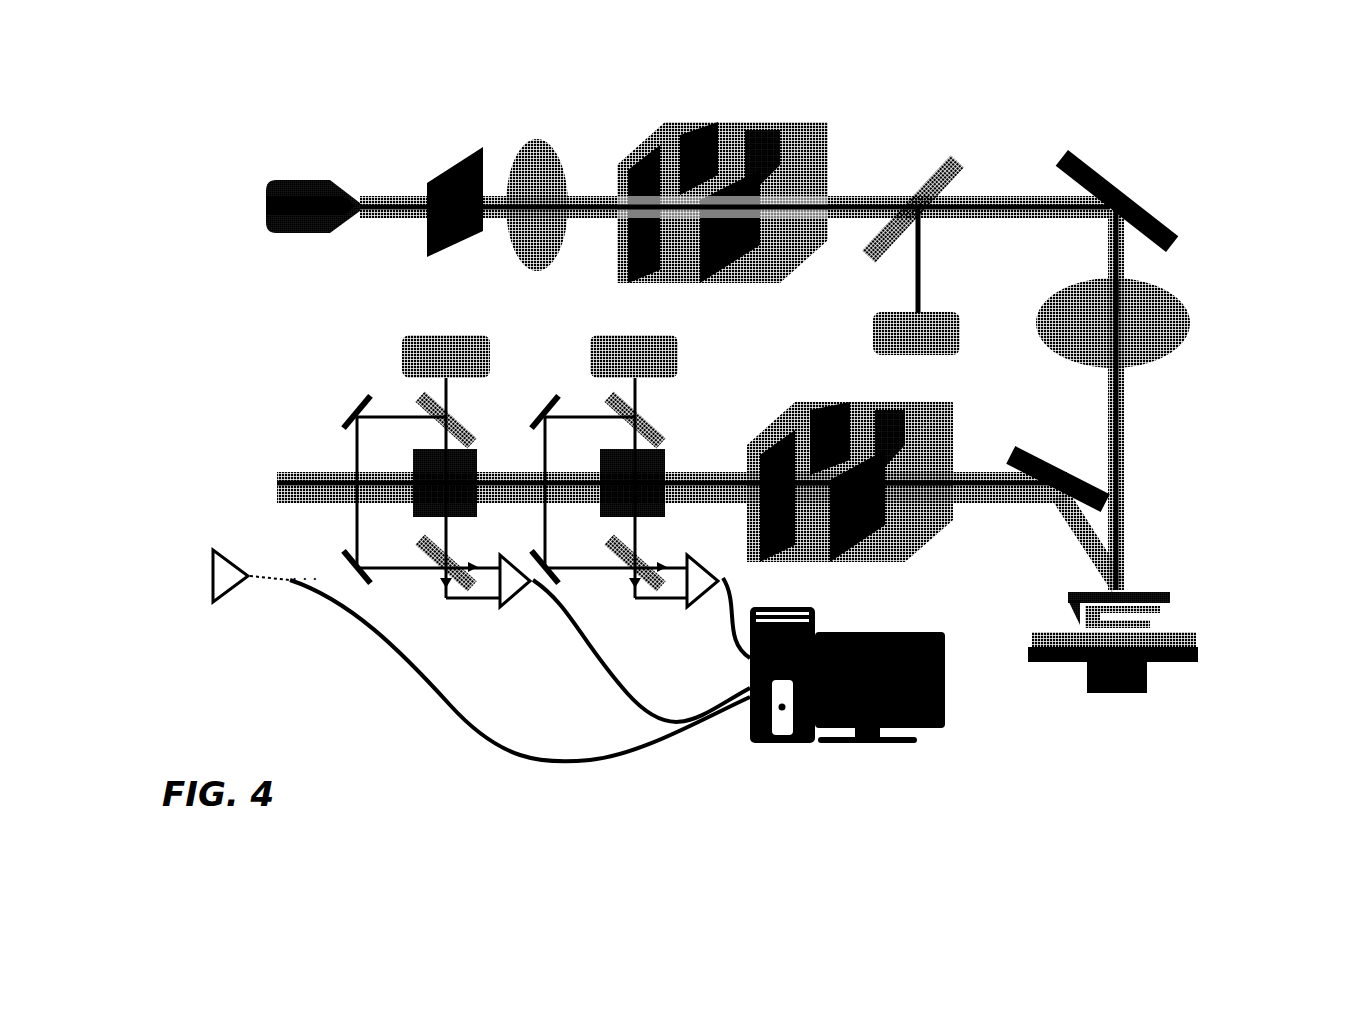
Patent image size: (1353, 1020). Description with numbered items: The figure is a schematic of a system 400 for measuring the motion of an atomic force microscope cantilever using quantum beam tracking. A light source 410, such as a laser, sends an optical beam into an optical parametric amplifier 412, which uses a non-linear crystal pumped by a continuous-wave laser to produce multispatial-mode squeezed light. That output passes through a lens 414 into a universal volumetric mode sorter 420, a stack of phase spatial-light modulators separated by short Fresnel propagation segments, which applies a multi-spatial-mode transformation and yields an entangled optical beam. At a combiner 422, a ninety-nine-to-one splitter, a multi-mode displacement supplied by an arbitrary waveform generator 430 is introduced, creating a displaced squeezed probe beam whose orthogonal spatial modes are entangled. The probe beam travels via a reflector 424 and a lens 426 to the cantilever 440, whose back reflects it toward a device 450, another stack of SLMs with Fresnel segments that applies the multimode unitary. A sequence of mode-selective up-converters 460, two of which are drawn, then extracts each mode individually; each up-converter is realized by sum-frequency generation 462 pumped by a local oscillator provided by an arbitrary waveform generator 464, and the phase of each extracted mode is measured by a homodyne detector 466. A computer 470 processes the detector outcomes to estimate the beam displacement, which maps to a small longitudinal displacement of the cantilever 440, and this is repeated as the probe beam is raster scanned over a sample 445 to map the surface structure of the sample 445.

The system 400 is at (150, 240).
The light source 410 is at (307, 188).
The optical parametric amplifier 412 is at (432, 258).
The lens 414 is at (527, 268).
The universal volumetric mode sorter 420 is at (743, 122).
The combiner 422 is at (938, 170).
The reflector 424 is at (1117, 177).
The lens 426 is at (1185, 337).
The arbitrary waveform generator 430 is at (916, 350).
The cantilever 440 is at (1152, 575).
The sample 445 is at (1165, 623).
The device 450 is at (875, 562).
The mode-selective up-converters 460 is at (335, 448).
The sum-frequency generation 462 is at (649, 500).
The arbitrary waveform generator 464 is at (634, 340).
The homodyne detector 466 is at (690, 599).
The computer 470 is at (882, 755).